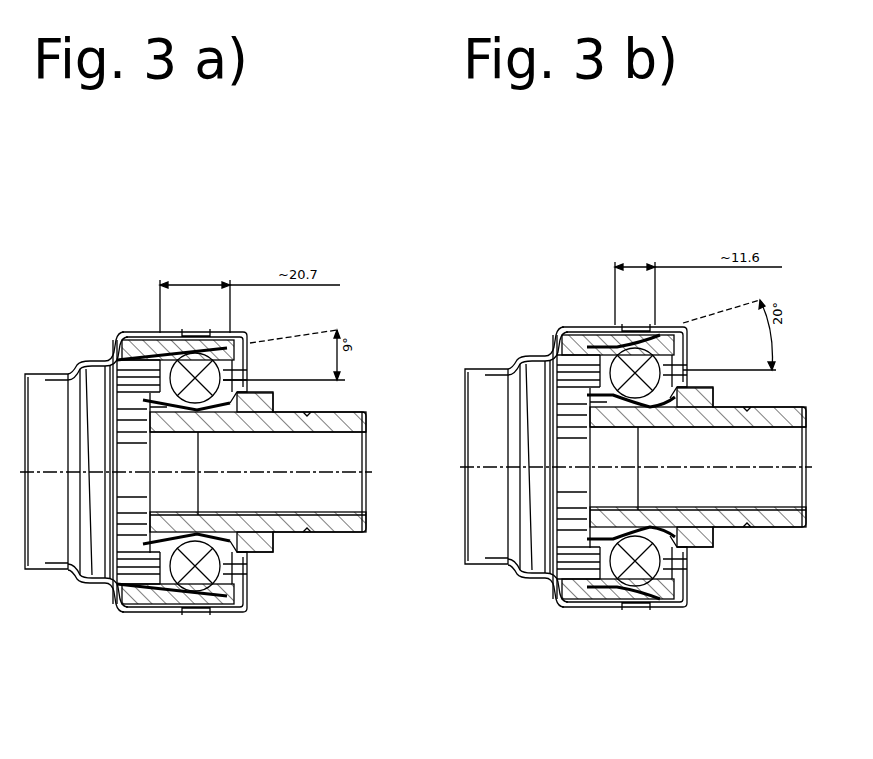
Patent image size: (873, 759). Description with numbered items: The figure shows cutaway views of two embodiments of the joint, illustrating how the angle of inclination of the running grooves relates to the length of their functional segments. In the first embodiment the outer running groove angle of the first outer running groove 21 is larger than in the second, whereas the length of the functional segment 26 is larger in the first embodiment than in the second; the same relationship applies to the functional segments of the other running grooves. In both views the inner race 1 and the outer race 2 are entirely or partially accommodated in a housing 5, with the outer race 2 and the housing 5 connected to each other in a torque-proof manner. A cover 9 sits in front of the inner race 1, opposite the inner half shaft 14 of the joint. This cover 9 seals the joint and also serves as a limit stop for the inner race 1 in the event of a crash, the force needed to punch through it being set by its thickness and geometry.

In FIG. 3a, the inner race 1 is at (357, 537).
In FIG. 3b, the inner race 1 is at (758, 527).
In FIG. 3a, the outer race 2 is at (208, 597).
In FIG. 3b, the outer race 2 is at (653, 590).
In FIG. 3a, the housing 5 is at (40, 572).
In FIG. 3b, the housing 5 is at (473, 567).
In FIG. 3a, the cover 9 is at (99, 583).
In FIG. 3b, the cover 9 is at (517, 563).
In FIG. 3a, the inner half shaft 14 is at (347, 412).
In FIG. 3a, the first outer running groove 21 is at (229, 393).
In FIG. 3b, the first outer running groove 21 is at (676, 345).
In FIG. 3a, the functional segment 26 is at (197, 333).
In FIG. 3b, the functional segment 26 is at (643, 325).